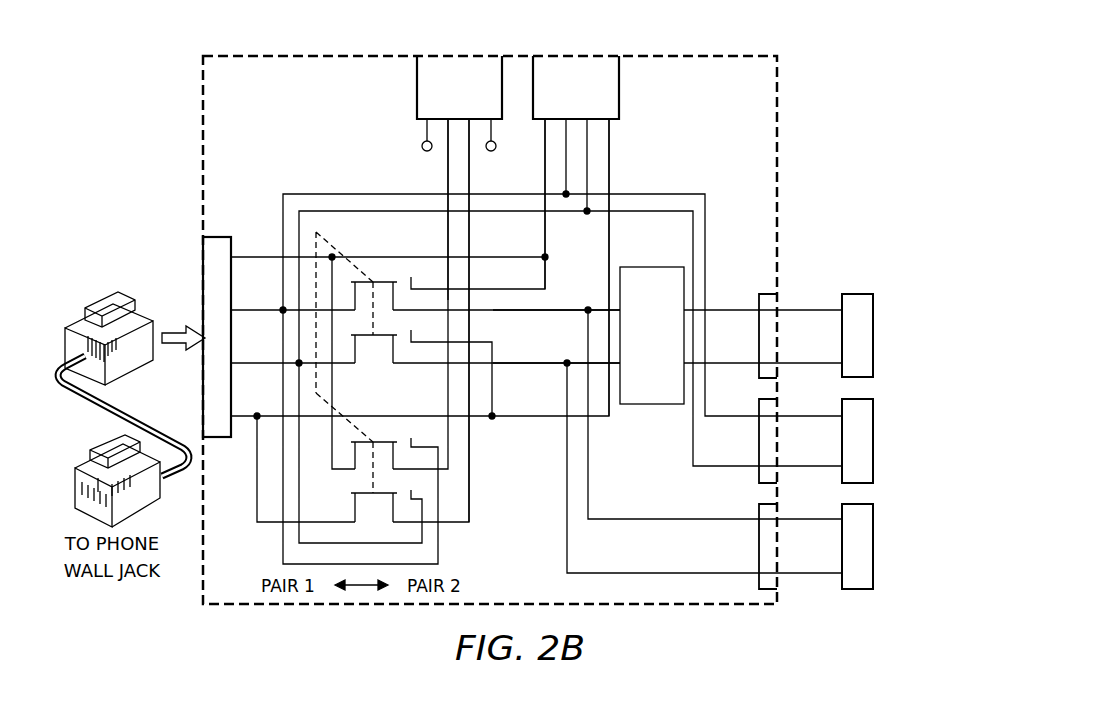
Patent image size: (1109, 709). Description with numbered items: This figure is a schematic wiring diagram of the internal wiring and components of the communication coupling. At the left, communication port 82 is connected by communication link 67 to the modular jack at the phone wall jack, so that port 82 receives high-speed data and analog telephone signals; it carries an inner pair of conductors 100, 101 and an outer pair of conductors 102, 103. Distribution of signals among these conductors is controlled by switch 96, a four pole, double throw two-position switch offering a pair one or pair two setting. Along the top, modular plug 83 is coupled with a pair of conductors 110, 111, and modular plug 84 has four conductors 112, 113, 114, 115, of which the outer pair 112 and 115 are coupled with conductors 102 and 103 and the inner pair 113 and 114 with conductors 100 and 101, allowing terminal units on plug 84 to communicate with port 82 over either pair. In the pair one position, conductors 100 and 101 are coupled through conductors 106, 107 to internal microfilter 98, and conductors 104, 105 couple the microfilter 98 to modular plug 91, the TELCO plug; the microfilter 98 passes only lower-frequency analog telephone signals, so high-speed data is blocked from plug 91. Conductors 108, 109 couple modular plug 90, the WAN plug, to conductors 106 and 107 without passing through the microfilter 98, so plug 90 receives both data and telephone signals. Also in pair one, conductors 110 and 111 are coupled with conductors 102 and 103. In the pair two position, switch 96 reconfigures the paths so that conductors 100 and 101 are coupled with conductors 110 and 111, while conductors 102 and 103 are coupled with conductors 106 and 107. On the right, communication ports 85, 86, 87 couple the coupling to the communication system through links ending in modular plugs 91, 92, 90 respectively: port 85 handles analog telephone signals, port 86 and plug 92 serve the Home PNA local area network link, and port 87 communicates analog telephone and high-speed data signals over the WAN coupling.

The communication link 67 is at (150, 424).
The communication port 82 is at (224, 440).
The modular plug 83 is at (415, 90).
The modular plug 84 is at (620, 88).
The communication port 85 is at (778, 337).
The communication port 86 is at (778, 444).
The communication port 87 is at (778, 549).
The modular plug 90 is at (874, 549).
The modular plug 91 is at (874, 333).
The modular plug 92 is at (874, 445).
The switch 96 is at (352, 246).
The internal microfilter 98 is at (655, 405).
The conductor 100 is at (276, 308).
The conductor 101 is at (276, 362).
The conductor 102 is at (255, 251).
The conductor 103 is at (276, 415).
The conductor 104 is at (729, 307).
The conductor 105 is at (718, 361).
The conductor 106 is at (568, 307).
The conductor 107 is at (536, 361).
The conductor 108 is at (716, 516).
The conductor 109 is at (716, 570).
The conductor 110 is at (446, 165).
The conductor 111 is at (471, 478).
The conductor 112 is at (543, 226).
The conductor 113 is at (564, 165).
The conductor 114 is at (589, 165).
The conductor 115 is at (611, 232).